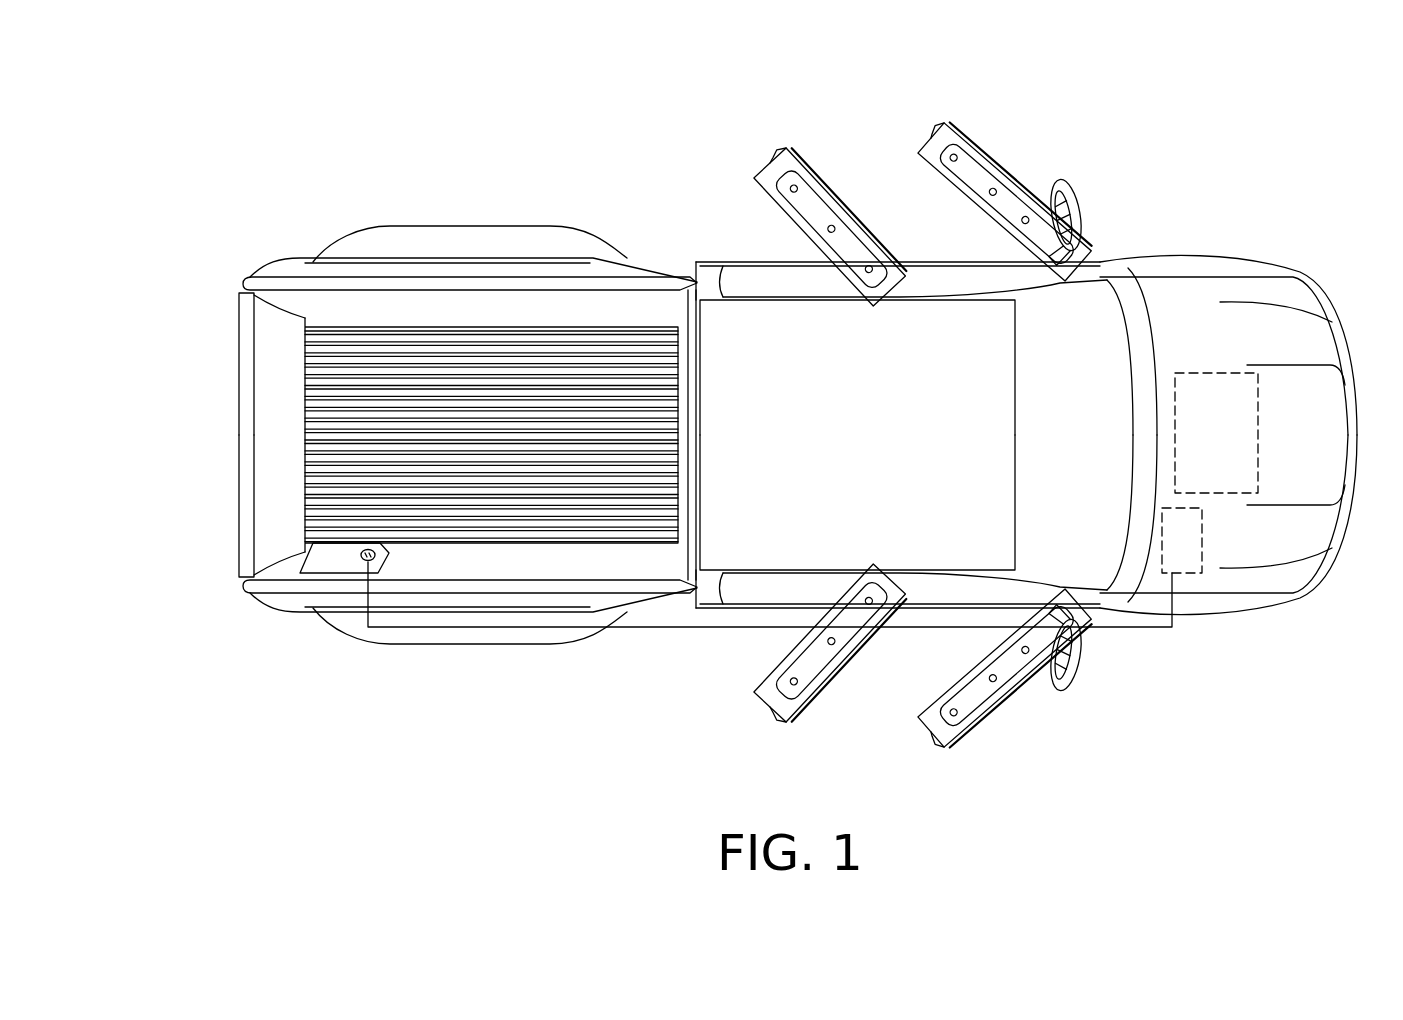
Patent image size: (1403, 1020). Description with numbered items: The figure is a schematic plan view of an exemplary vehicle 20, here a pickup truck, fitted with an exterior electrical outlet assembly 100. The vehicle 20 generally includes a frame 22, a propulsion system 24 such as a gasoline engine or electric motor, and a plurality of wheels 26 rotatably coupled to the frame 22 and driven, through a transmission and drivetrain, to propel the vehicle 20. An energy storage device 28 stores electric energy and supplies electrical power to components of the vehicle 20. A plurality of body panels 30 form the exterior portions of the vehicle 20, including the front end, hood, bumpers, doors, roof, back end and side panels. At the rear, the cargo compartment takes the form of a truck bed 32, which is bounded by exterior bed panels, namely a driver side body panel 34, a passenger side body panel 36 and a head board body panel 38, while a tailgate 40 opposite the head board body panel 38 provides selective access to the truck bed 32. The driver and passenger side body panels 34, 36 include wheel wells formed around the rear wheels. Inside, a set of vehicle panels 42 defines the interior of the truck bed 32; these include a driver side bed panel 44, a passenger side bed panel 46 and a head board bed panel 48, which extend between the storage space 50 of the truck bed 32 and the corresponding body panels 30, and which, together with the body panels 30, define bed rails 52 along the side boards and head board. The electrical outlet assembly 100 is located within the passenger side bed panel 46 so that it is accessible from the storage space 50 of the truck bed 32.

The vehicle 20 is at (545, 158).
The frame 22 is at (903, 255).
The propulsion system 24 is at (1217, 373).
The wheels 26 is at (1250, 605).
The energy storage device 28 is at (1193, 580).
The body panels 30 is at (620, 268).
The truck bed 32 is at (222, 278).
The driver side body panel 34 is at (272, 275).
The passenger side body panel 36 is at (345, 622).
The head board body panel 38 is at (713, 352).
The tailgate 40 is at (240, 502).
The vehicle panels 42 is at (313, 293).
The driver side bed panel 44 is at (452, 300).
The passenger side bed panel 46 is at (470, 558).
The head board bed panel 48 is at (678, 352).
The storage space 50 is at (610, 485).
The bed rails 52 is at (583, 593).
The electrical outlet assembly 100 is at (348, 570).